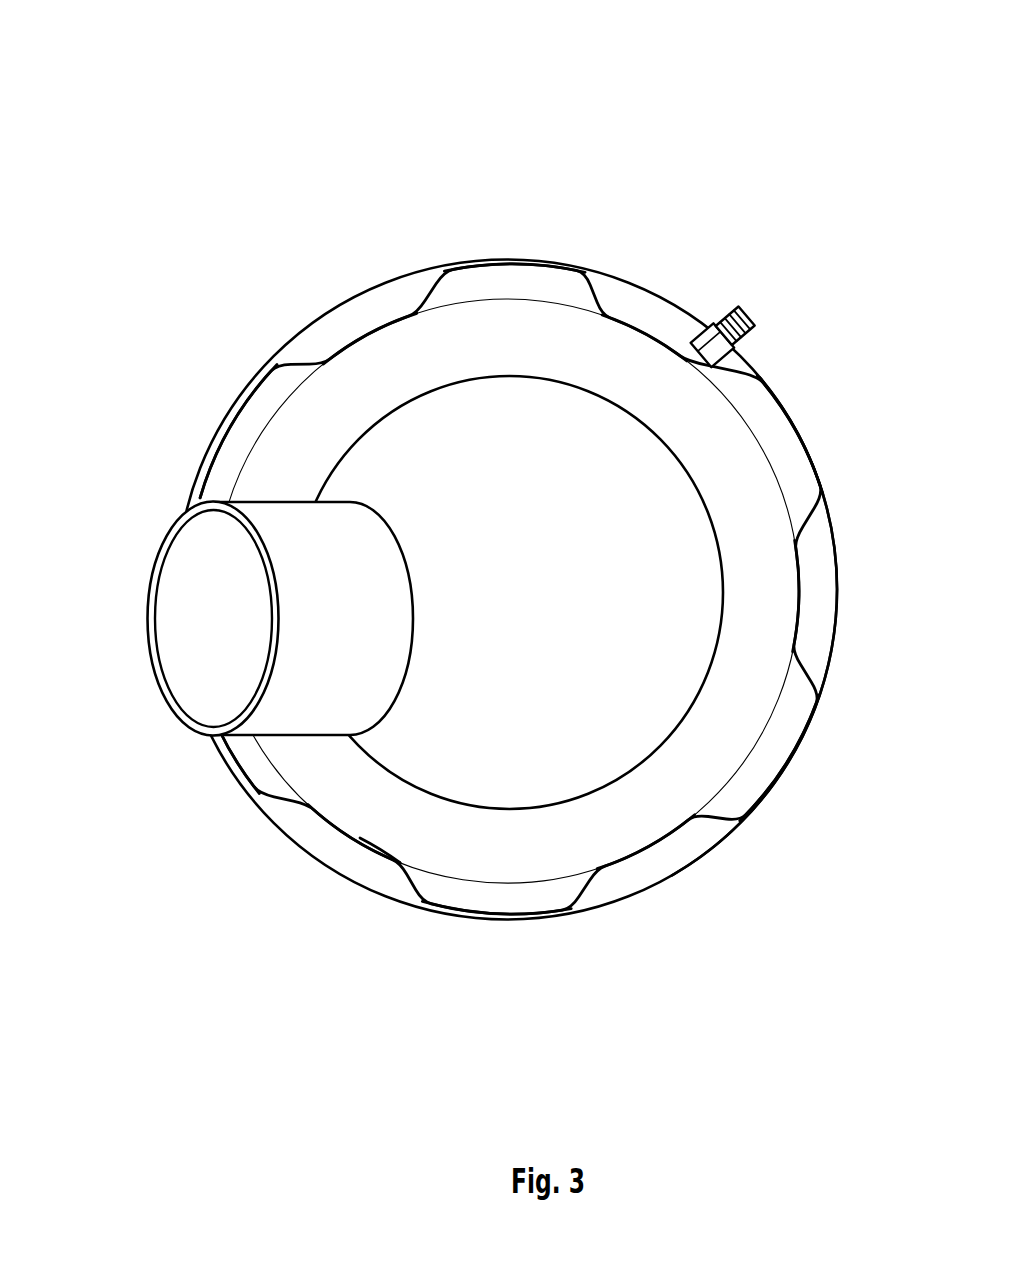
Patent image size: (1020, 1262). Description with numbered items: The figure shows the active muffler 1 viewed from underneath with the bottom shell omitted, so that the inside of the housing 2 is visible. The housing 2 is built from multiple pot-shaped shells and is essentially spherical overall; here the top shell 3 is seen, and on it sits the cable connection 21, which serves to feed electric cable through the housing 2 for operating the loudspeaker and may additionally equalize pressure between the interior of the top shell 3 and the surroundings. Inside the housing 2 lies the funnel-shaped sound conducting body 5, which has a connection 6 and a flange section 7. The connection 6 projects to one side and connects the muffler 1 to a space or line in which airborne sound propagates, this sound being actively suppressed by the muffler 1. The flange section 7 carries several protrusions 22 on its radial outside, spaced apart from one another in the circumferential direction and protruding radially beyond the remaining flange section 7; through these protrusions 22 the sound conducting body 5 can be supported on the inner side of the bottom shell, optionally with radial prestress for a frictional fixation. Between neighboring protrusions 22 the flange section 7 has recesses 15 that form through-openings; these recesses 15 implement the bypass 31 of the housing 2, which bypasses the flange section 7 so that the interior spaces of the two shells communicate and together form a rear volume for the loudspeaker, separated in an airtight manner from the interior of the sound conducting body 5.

The active muffler 1 is at (128, 213).
The housing 2 is at (824, 500).
The top shell 3 is at (840, 548).
The sound conducting body 5 is at (635, 328).
The connection 6 is at (212, 628).
The flange section 7 is at (405, 318).
The recesses 15 is at (333, 322).
The cable connection 21 is at (752, 312).
The protrusions 22 is at (503, 294).
The bypass 31 is at (384, 861).